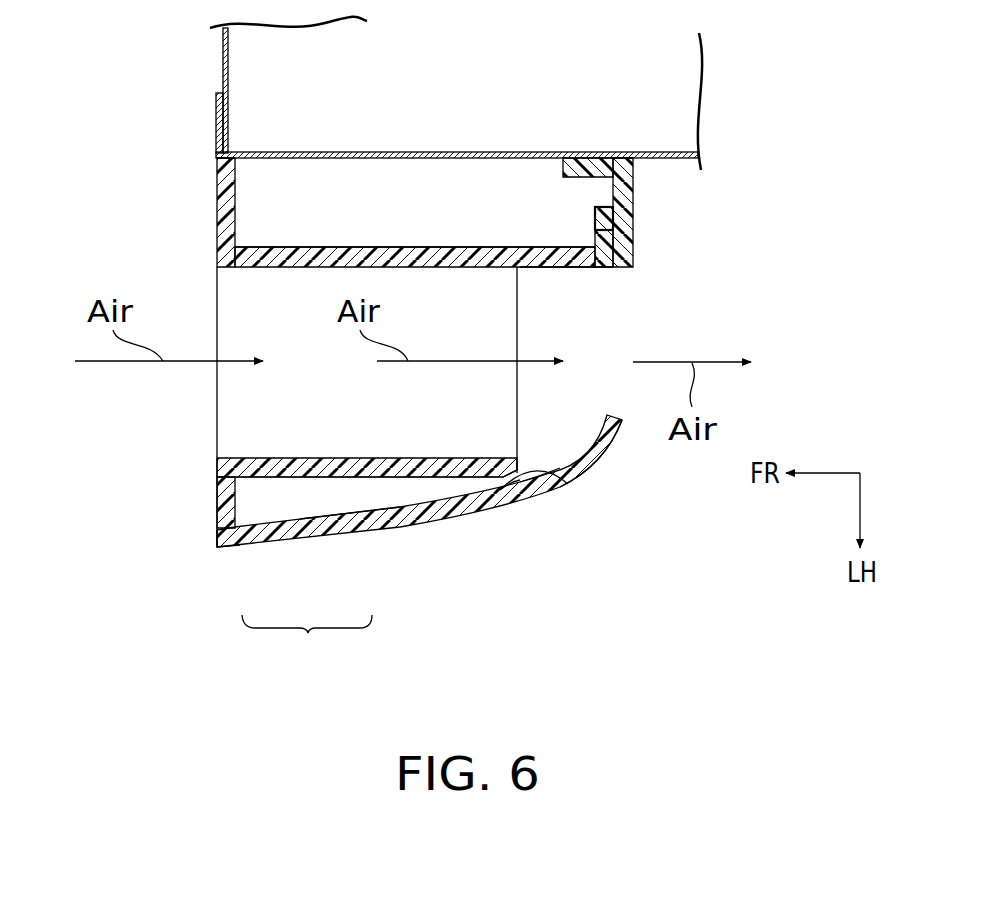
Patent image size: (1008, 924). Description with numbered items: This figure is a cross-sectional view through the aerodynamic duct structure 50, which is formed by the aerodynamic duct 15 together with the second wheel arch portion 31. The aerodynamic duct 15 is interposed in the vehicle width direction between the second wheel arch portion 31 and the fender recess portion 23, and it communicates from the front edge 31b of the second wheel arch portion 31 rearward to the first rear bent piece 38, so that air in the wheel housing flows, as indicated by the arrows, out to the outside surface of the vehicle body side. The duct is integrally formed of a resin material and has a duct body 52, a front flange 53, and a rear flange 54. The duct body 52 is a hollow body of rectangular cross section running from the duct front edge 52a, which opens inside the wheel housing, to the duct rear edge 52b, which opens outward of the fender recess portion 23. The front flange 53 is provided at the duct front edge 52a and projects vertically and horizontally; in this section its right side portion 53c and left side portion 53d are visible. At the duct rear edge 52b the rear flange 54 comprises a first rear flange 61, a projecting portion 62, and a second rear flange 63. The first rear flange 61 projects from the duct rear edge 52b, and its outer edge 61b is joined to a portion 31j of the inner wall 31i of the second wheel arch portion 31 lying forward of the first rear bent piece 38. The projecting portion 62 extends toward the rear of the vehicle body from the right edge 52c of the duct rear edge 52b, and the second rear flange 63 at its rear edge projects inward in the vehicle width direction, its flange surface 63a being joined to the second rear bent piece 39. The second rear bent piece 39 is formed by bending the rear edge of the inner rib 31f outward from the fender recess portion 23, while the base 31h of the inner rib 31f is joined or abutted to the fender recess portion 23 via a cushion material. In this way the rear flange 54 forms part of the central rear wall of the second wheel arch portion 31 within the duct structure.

The aerodynamic duct 15 is at (277, 487).
The fender recess portion 23 is at (375, 160).
The second wheel arch portion 31 is at (348, 537).
The front edge 31b is at (237, 544).
The inner rib 31f is at (619, 150).
The base 31h is at (577, 166).
The inner wall 31i is at (413, 486).
The portion 31j is at (533, 496).
The first rear bent piece 38 is at (601, 460).
The second rear bent piece 39 is at (635, 182).
The aerodynamic duct structure 50 is at (307, 643).
The duct body 52 is at (331, 245).
The duct front edge 52a is at (260, 457).
The duct rear edge 52b is at (487, 457).
The right edge 52c is at (517, 258).
The front flange 53 is at (214, 222).
The right side portion 53c is at (216, 180).
The left side portion 53d is at (220, 497).
The rear flange 54 is at (588, 270).
The first rear flange 61 is at (548, 478).
The outer edge 61b is at (513, 487).
The projecting portion 62 is at (546, 248).
The second rear flange 63 is at (613, 255).
The flange surface 63a is at (608, 218).